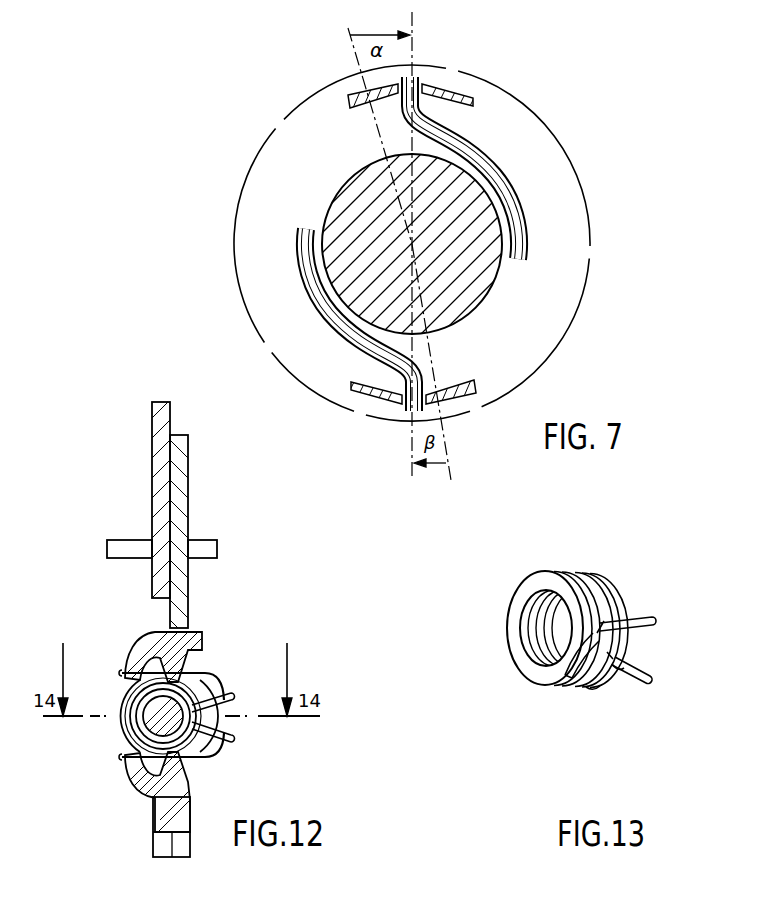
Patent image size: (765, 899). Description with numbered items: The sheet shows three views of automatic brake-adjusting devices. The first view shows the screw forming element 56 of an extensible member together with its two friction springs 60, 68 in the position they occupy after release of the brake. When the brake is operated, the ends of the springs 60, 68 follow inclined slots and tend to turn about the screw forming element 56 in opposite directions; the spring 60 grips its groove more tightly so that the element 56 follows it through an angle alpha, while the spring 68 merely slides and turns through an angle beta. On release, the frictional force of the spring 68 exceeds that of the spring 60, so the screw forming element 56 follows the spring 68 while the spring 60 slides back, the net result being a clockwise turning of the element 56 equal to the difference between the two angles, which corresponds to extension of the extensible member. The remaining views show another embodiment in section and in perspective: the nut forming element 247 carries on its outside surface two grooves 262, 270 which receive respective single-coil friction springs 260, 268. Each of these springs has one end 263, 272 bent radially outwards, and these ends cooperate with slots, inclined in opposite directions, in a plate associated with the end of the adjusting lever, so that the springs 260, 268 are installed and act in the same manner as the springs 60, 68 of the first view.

In FIG. 7, the screw forming element 56 is at (468, 282).
In FIG. 7, the spring 60 is at (498, 190).
In FIG. 7, the spring 68 is at (310, 292).
In FIG. 13, the nut forming element 247 is at (532, 584).
In FIG. 13, the single-coil friction spring 268 is at (593, 590).
In FIG. 13, the end 272 is at (640, 612).
In FIG. 13, the end 263 is at (647, 667).
In FIG. 13, the groove 270 is at (590, 636).
In FIG. 13, the single-coil friction spring 260 is at (593, 689).
In FIG. 13, the groove 262 is at (618, 668).